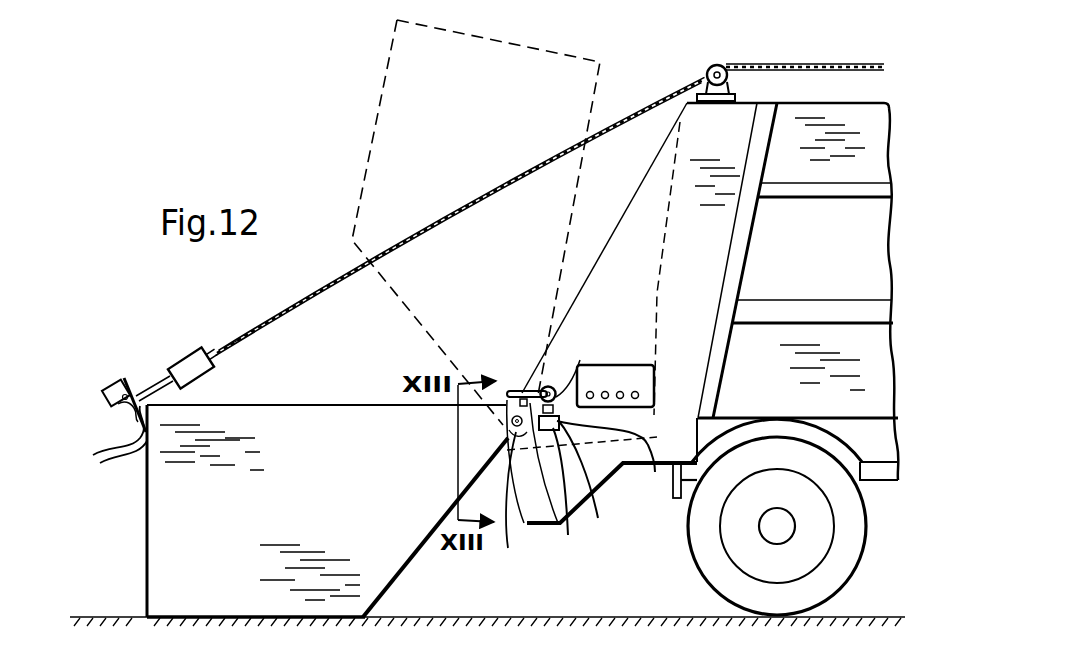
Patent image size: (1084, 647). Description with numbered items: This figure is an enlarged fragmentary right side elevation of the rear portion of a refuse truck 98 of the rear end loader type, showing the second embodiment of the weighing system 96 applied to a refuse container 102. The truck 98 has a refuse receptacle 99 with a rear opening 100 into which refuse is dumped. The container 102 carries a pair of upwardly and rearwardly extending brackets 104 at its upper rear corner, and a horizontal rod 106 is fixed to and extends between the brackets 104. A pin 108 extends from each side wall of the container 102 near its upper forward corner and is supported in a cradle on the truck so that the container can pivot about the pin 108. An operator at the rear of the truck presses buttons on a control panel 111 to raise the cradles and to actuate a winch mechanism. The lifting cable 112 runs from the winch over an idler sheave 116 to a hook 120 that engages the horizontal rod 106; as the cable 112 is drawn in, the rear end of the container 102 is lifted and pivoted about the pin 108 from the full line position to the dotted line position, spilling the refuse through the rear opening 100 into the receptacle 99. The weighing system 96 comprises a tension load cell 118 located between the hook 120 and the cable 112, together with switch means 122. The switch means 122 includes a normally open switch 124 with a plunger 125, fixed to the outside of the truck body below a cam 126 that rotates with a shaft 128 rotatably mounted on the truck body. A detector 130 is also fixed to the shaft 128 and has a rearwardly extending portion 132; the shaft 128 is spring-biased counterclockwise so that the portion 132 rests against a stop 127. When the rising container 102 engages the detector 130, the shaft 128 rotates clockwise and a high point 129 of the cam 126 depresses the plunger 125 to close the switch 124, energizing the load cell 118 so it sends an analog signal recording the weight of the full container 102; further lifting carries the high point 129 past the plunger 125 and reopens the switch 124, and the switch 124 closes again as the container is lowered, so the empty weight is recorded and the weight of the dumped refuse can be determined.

The second embodiment of the weighing system 96 is at (226, 338).
The refuse truck 98 is at (675, 508).
The refuse receptacle 99 is at (753, 113).
The rear opening 100 is at (610, 231).
The refuse container 102 is at (145, 497).
The brackets 104 is at (96, 439).
The horizontal rod 106 is at (118, 404).
The pin 108 is at (500, 423).
The control panel 111 is at (655, 363).
The cable 112 is at (490, 196).
The idler sheave 116 is at (721, 65).
The tension load cell 118 is at (193, 363).
The hook 120 is at (126, 376).
The switch means 122 is at (519, 368).
The normally open switch 124 is at (575, 498).
The plunger 125 is at (596, 481).
The cam 126 is at (556, 392).
The stop 127 is at (514, 505).
The shaft 128 is at (548, 385).
The high point 129 is at (611, 463).
The detector 130 is at (502, 440).
The rearwardly extending portion 132 is at (508, 390).